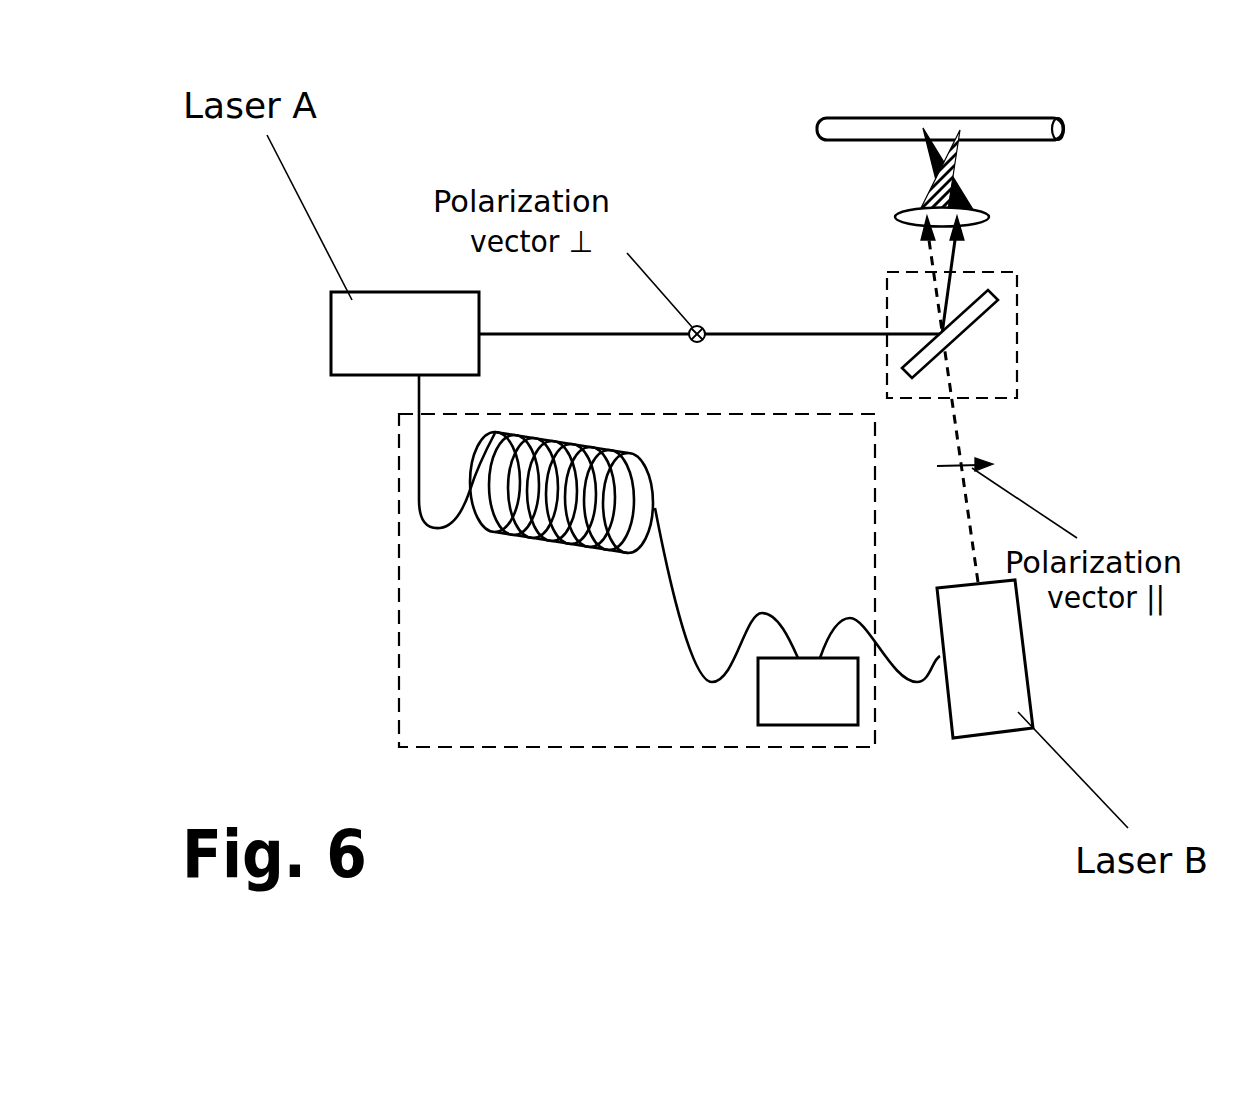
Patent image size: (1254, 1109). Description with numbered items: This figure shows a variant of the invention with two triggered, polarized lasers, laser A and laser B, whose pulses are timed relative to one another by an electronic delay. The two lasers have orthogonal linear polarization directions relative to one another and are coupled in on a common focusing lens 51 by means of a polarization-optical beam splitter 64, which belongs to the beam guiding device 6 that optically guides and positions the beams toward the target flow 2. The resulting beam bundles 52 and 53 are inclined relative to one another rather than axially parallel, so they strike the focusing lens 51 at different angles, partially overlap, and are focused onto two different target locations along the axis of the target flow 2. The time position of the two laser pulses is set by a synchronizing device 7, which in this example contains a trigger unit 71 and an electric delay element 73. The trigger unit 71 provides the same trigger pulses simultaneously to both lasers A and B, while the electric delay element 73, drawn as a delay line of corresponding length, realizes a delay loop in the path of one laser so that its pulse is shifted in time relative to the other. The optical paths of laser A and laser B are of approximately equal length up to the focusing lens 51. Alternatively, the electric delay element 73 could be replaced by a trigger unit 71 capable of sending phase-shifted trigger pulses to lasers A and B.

The target flow 2 is at (817, 122).
The focusing lens 51 is at (988, 214).
The beam bundle 52 is at (933, 262).
The beam bundle 53 is at (952, 263).
The polarization-optical beam splitter 64 is at (985, 308).
The beam guiding device 6 is at (1017, 370).
The synchronizing device 7 is at (397, 583).
The trigger unit 71 is at (807, 675).
The electric delay element 73 is at (553, 542).